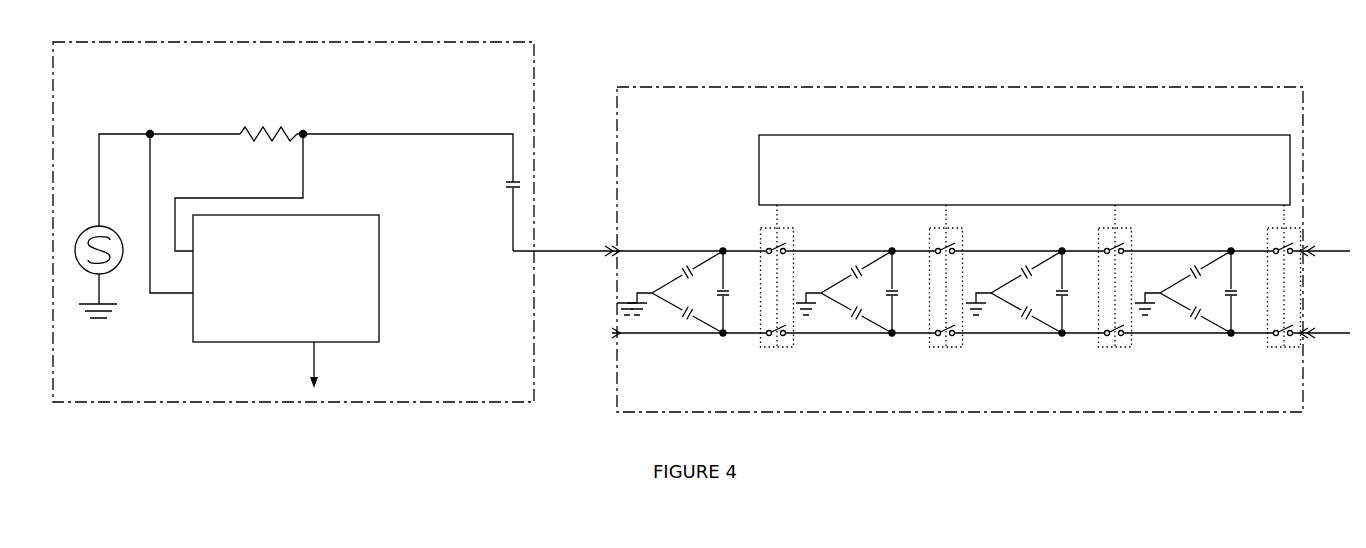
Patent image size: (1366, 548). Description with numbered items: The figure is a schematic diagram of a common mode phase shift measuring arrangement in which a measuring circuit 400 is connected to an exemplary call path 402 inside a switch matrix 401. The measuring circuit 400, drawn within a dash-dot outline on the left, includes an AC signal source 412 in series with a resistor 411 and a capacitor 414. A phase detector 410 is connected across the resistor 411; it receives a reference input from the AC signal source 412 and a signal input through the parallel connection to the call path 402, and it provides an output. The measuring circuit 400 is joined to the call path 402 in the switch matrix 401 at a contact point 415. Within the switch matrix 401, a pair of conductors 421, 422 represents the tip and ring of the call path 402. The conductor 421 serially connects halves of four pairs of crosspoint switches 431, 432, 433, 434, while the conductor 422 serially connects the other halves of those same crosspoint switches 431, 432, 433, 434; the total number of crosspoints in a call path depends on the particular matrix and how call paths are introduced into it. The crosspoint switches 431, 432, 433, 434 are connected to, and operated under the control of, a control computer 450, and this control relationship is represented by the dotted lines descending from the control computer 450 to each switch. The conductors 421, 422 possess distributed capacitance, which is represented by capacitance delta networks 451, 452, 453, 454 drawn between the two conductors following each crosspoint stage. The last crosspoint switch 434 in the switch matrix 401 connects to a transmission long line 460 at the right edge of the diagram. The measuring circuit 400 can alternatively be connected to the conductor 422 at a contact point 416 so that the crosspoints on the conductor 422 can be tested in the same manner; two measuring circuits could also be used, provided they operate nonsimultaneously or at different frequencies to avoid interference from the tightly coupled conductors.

The measuring circuit 400 is at (555, 58).
The switch matrix 401 is at (1076, 76).
The call path 402 is at (603, 297).
The phase detector 410 is at (321, 290).
The resistor 411 is at (268, 108).
The AC signal source 412 is at (90, 231).
The capacitor 414 is at (498, 175).
The contact point 415 is at (593, 237).
The contact point 416 is at (598, 350).
The conductor 421 is at (634, 240).
The conductor 422 is at (637, 350).
The crosspoint switch 431 is at (805, 240).
The crosspoint switch 432 is at (977, 241).
The crosspoint switch 433 is at (1148, 243).
The crosspoint switch 434 is at (1250, 352).
The control computer 450 is at (1082, 189).
The capacitance delta network 451 is at (712, 300).
The capacitance delta network 452 is at (881, 300).
The capacitance delta network 453 is at (1051, 300).
The capacitance delta network 454 is at (1220, 300).
The transmission long line 460 is at (1334, 325).